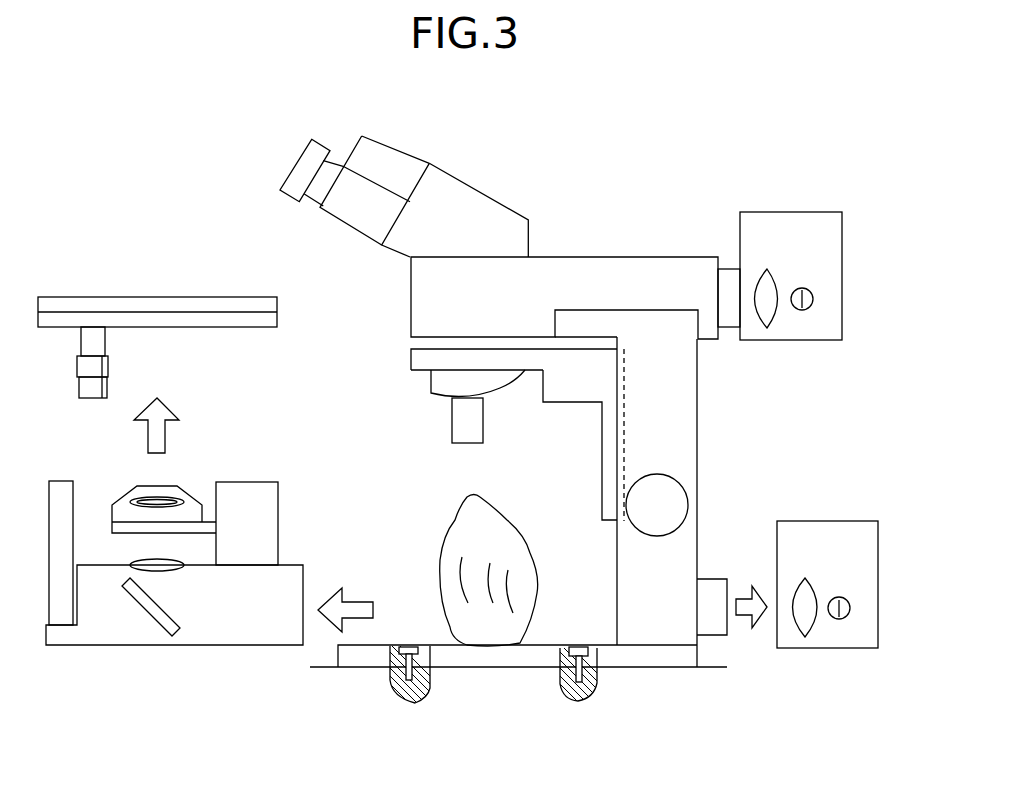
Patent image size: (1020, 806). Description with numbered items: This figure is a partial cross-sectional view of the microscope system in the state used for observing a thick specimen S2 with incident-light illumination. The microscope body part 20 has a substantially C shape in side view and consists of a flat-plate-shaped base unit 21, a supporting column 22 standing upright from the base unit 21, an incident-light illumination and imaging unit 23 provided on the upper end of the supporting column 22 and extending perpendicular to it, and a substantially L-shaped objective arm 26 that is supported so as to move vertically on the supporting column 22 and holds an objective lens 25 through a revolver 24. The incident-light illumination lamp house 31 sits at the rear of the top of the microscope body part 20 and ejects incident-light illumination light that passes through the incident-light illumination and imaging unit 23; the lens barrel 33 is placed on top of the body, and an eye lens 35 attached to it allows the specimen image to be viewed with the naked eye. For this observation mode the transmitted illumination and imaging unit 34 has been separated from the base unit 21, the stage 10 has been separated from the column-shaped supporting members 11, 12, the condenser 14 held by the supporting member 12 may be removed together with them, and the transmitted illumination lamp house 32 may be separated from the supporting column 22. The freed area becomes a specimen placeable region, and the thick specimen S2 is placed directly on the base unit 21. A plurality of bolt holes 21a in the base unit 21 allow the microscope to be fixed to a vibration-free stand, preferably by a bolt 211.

The stage 10 is at (220, 297).
The supporting member 11 is at (53, 480).
The supporting member 12 is at (270, 495).
The condenser 14 is at (178, 497).
The microscope body part 20 is at (510, 384).
The base unit 21 is at (365, 655).
The bolt 211 is at (408, 646).
The bolt hole 21a is at (432, 660).
The supporting column 22 is at (683, 442).
The incident-light illumination and imaging unit 23 is at (671, 275).
The revolver 24 is at (440, 386).
The objective lens 25 is at (458, 420).
The objective arm 26 is at (561, 397).
The incident-light illumination lamp house 31 is at (823, 247).
The transmitted illumination lamp house 32 is at (850, 527).
The lens barrel 33 is at (467, 200).
The transmitted illumination and imaging unit 34 is at (200, 628).
The eye lens 35 is at (307, 158).
The thick specimen S2 is at (510, 540).